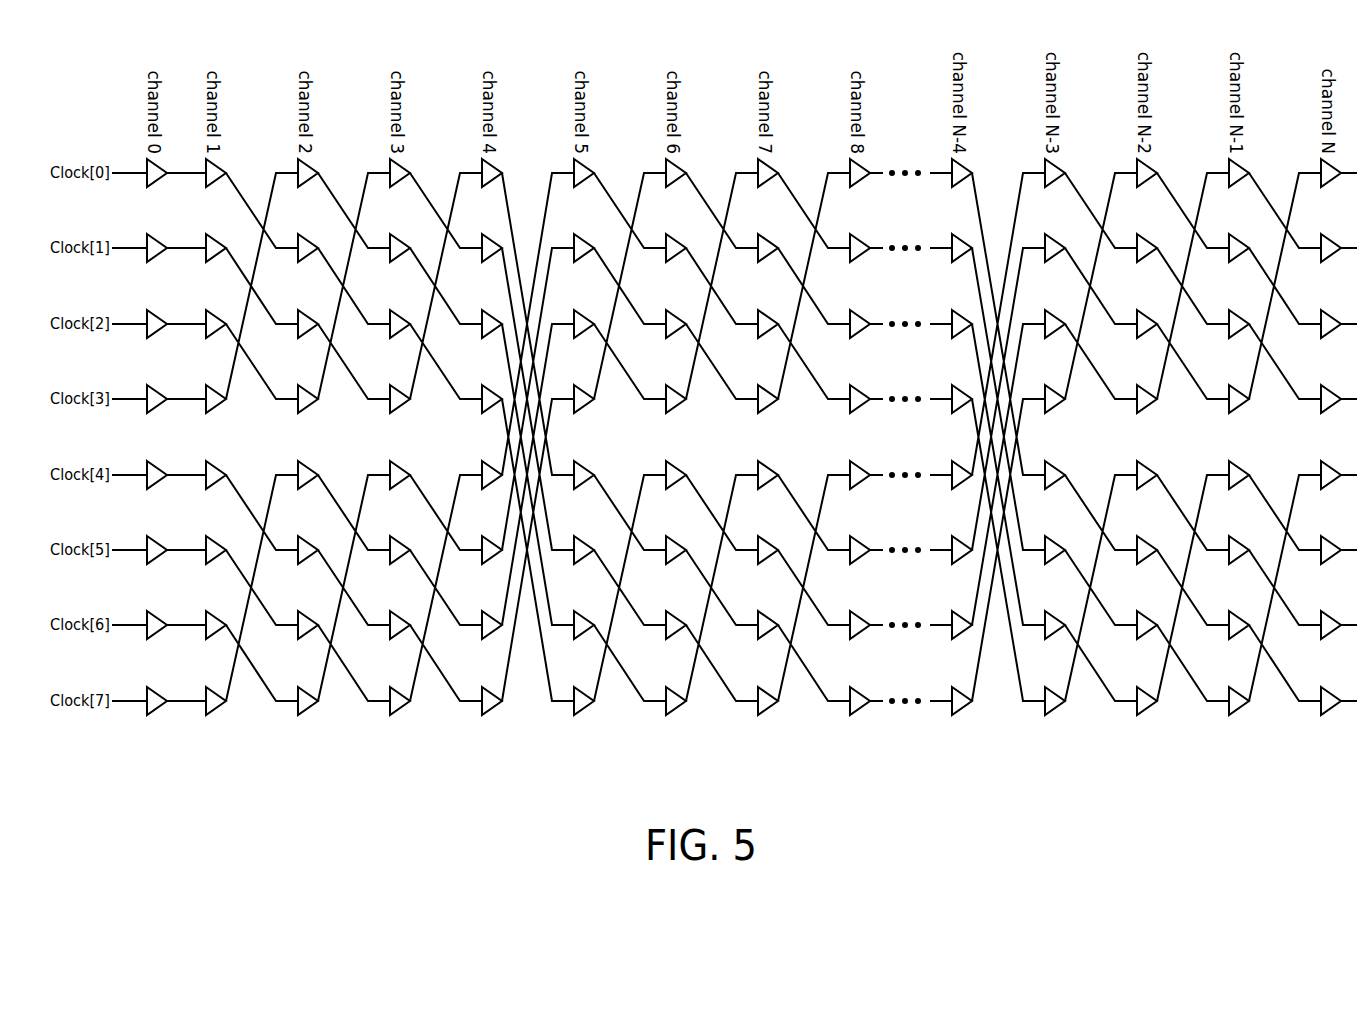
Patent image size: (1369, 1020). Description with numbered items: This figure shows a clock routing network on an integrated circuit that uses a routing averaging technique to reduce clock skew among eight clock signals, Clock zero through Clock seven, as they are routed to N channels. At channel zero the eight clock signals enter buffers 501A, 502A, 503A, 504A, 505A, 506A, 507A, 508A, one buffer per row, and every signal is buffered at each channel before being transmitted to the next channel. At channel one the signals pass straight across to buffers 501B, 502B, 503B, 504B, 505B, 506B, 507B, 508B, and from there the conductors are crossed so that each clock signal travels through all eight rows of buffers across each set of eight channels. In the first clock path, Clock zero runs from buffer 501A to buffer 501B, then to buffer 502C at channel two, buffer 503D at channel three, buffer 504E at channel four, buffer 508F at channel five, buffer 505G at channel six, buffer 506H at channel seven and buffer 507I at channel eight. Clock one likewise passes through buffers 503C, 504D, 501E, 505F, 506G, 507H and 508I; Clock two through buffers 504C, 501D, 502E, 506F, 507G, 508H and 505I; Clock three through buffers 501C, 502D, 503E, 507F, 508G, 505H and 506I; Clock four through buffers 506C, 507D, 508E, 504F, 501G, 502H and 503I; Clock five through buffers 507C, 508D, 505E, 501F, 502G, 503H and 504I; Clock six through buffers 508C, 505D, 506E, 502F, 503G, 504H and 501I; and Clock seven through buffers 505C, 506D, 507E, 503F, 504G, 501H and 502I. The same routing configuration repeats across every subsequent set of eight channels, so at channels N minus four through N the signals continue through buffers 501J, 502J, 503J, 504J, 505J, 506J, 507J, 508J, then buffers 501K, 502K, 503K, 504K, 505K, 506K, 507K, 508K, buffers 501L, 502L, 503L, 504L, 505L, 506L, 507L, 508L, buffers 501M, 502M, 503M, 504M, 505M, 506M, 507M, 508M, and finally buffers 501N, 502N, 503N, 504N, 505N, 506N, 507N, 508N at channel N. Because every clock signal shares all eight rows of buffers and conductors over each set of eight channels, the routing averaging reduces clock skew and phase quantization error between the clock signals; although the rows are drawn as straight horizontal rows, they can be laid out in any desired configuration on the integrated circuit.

The buffer 501A is at (151, 185).
The buffer 502A is at (151, 260).
The buffer 503A is at (151, 336).
The buffer 504A is at (151, 411).
The buffer 505A is at (151, 487).
The buffer 506A is at (151, 562).
The buffer 507A is at (151, 637).
The buffer 508A is at (151, 713).
The buffer 501B is at (210, 185).
The buffer 502B is at (210, 260).
The buffer 503B is at (210, 336).
The buffer 504B is at (210, 411).
The buffer 505B is at (210, 487).
The buffer 506B is at (210, 562).
The buffer 507B is at (210, 637).
The buffer 508B is at (210, 713).
The buffer 501C is at (302, 185).
The buffer 502C is at (302, 260).
The buffer 503C is at (302, 336).
The buffer 504C is at (302, 411).
The buffer 505C is at (302, 487).
The buffer 506C is at (302, 562).
The buffer 507C is at (302, 637).
The buffer 508C is at (302, 713).
The buffer 501D is at (394, 185).
The buffer 502D is at (394, 260).
The buffer 503D is at (394, 336).
The buffer 504D is at (394, 411).
The buffer 505D is at (394, 487).
The buffer 506D is at (394, 562).
The buffer 507D is at (394, 637).
The buffer 508D is at (394, 713).
The buffer 501E is at (486, 185).
The buffer 502E is at (486, 260).
The buffer 503E is at (486, 336).
The buffer 504E is at (486, 411).
The buffer 505E is at (486, 487).
The buffer 506E is at (486, 562).
The buffer 507E is at (486, 637).
The buffer 508E is at (486, 713).
The buffer 501F is at (578, 185).
The buffer 502F is at (578, 260).
The buffer 503F is at (578, 336).
The buffer 504F is at (578, 411).
The buffer 505F is at (578, 487).
The buffer 506F is at (578, 562).
The buffer 507F is at (578, 637).
The buffer 508F is at (578, 713).
The buffer 501G is at (670, 185).
The buffer 502G is at (670, 260).
The buffer 503G is at (670, 336).
The buffer 504G is at (670, 411).
The buffer 505G is at (670, 487).
The buffer 506G is at (670, 562).
The buffer 507G is at (670, 637).
The buffer 508G is at (670, 713).
The buffer 501H is at (762, 185).
The buffer 502H is at (762, 260).
The buffer 503H is at (762, 336).
The buffer 504H is at (762, 411).
The buffer 505H is at (762, 487).
The buffer 506H is at (762, 562).
The buffer 507H is at (762, 637).
The buffer 508H is at (762, 713).
The buffer 501I is at (854, 185).
The buffer 502I is at (854, 260).
The buffer 503I is at (854, 336).
The buffer 504I is at (854, 411).
The buffer 505I is at (854, 487).
The buffer 506I is at (854, 562).
The buffer 507I is at (854, 637).
The buffer 508I is at (854, 713).
The buffer 501J is at (956, 185).
The buffer 502J is at (956, 260).
The buffer 503J is at (956, 336).
The buffer 504J is at (956, 411).
The buffer 505J is at (956, 487).
The buffer 506J is at (956, 562).
The buffer 507J is at (956, 637).
The buffer 508J is at (956, 713).
The buffer 501K is at (1049, 185).
The buffer 502K is at (1049, 260).
The buffer 503K is at (1049, 336).
The buffer 504K is at (1049, 411).
The buffer 505K is at (1049, 487).
The buffer 506K is at (1049, 562).
The buffer 507K is at (1049, 637).
The buffer 508K is at (1049, 713).
The buffer 501L is at (1141, 185).
The buffer 502L is at (1141, 260).
The buffer 503L is at (1141, 336).
The buffer 504L is at (1141, 411).
The buffer 505L is at (1141, 487).
The buffer 506L is at (1141, 562).
The buffer 507L is at (1141, 637).
The buffer 508L is at (1141, 713).
The buffer 501M is at (1233, 185).
The buffer 502M is at (1233, 260).
The buffer 503M is at (1233, 336).
The buffer 504M is at (1233, 411).
The buffer 505M is at (1233, 487).
The buffer 506M is at (1233, 562).
The buffer 507M is at (1233, 637).
The buffer 508M is at (1233, 713).
The buffer 501N is at (1325, 185).
The buffer 502N is at (1325, 260).
The buffer 503N is at (1325, 336).
The buffer 504N is at (1325, 411).
The buffer 505N is at (1325, 487).
The buffer 506N is at (1325, 562).
The buffer 507N is at (1325, 637).
The buffer 508N is at (1325, 713).